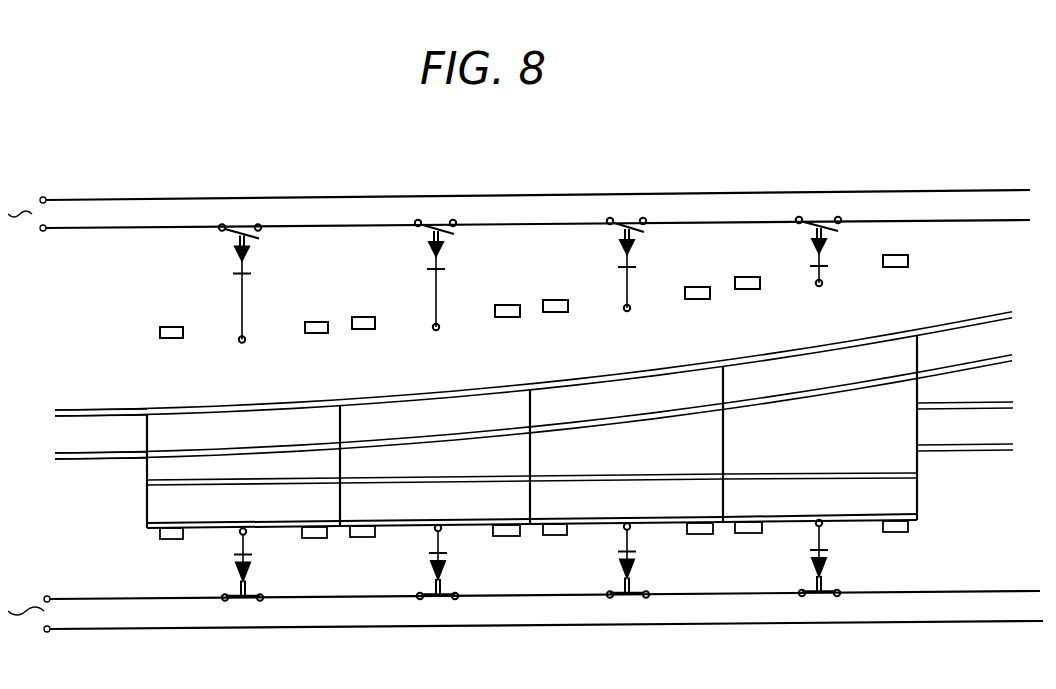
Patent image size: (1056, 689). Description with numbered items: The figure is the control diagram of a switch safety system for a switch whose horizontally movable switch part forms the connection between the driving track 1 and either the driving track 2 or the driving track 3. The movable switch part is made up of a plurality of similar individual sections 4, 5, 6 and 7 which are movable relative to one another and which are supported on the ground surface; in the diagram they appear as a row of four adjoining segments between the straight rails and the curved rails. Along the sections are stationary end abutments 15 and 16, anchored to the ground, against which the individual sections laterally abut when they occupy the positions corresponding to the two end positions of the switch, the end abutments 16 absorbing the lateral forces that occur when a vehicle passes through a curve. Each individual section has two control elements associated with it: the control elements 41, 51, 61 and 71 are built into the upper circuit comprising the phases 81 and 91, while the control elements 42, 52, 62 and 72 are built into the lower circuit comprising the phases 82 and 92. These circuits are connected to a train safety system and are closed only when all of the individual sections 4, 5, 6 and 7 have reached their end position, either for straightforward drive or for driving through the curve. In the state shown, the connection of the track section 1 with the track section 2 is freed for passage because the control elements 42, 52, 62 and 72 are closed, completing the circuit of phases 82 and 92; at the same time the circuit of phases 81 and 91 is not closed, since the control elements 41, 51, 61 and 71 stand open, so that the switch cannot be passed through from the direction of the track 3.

The driving track 1 is at (80, 440).
The driving track 2 is at (990, 333).
The driving track 3 is at (985, 434).
The individual section 4 is at (163, 468).
The individual section 5 is at (413, 462).
The individual section 6 is at (608, 462).
The individual section 7 is at (812, 458).
The stationary end abutment 15 is at (170, 339).
The stationary end abutment 16 is at (174, 541).
The control element 41 is at (250, 268).
The control element 42 is at (251, 568).
The control element 51 is at (444, 265).
The control element 52 is at (446, 563).
The control element 61 is at (633, 262).
The control element 62 is at (636, 561).
The control element 71 is at (825, 262).
The control element 72 is at (828, 557).
The phase 81 is at (105, 230).
The phase 82 is at (130, 600).
The phase 91 is at (125, 197).
The phase 92 is at (295, 630).